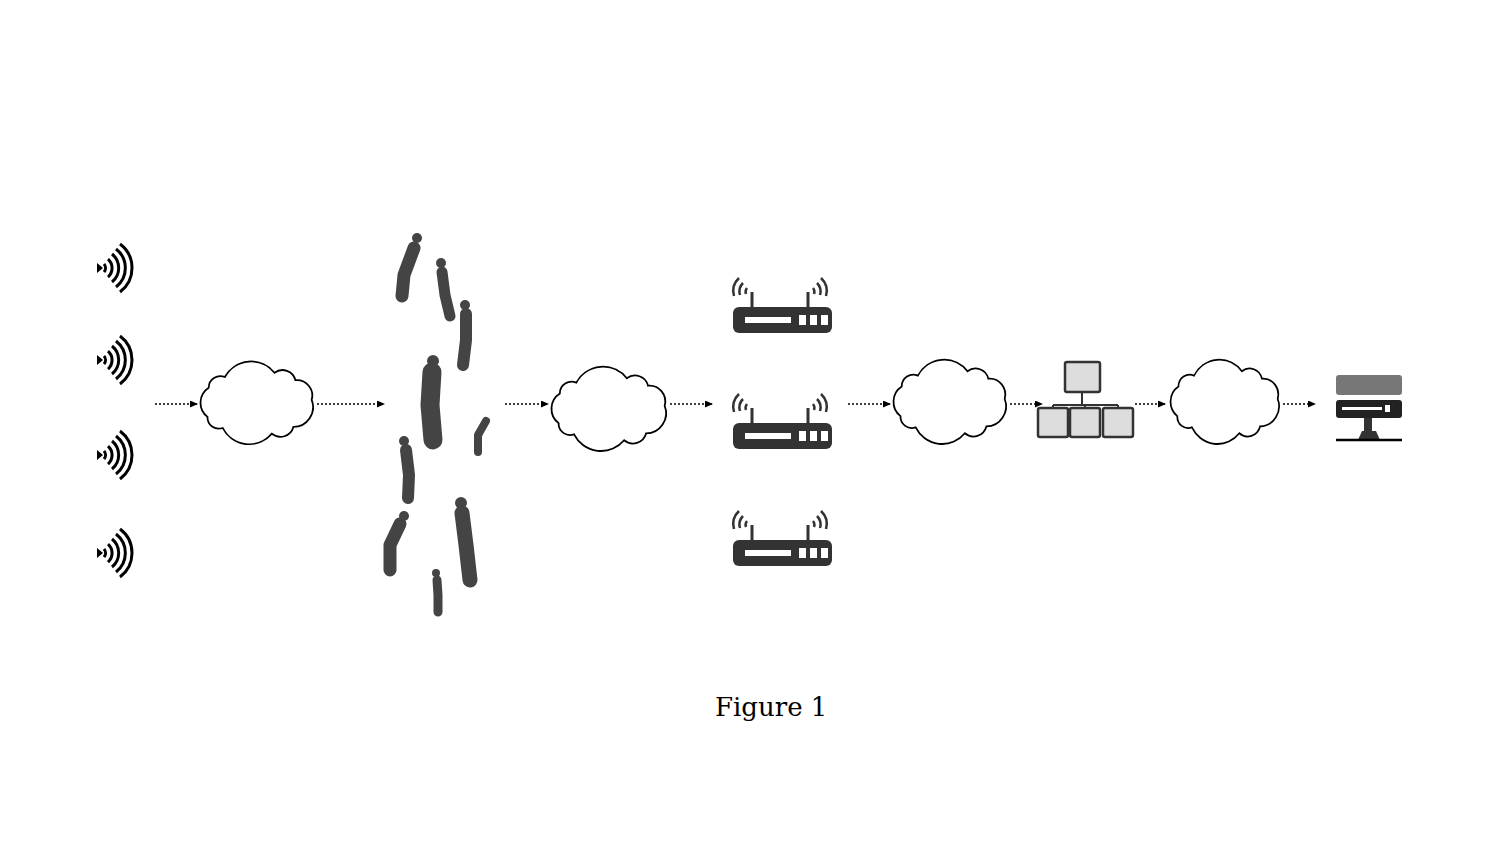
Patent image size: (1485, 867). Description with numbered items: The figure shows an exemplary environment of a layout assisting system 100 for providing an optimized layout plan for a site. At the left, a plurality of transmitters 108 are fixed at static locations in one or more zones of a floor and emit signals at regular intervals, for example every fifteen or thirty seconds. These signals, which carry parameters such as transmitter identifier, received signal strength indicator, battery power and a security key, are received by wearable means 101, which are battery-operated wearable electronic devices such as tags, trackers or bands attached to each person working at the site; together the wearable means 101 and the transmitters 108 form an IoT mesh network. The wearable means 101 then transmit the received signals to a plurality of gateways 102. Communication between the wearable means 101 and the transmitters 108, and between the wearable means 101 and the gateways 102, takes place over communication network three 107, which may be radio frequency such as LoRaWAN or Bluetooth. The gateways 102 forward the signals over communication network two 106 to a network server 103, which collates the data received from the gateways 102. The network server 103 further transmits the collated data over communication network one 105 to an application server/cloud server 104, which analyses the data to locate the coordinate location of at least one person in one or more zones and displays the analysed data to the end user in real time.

The layout assisting system 100 is at (895, 96).
The wearable means 101 is at (418, 236).
The plurality of gateways 102 is at (812, 262).
The network server 103 is at (1080, 362).
The application server/cloud server 104 is at (1358, 375).
The communication network 1 105 is at (1225, 402).
The communication network 2 106 is at (950, 402).
The communication network 3 107 is at (434, 406).
The plurality of transmitters 108 is at (115, 232).